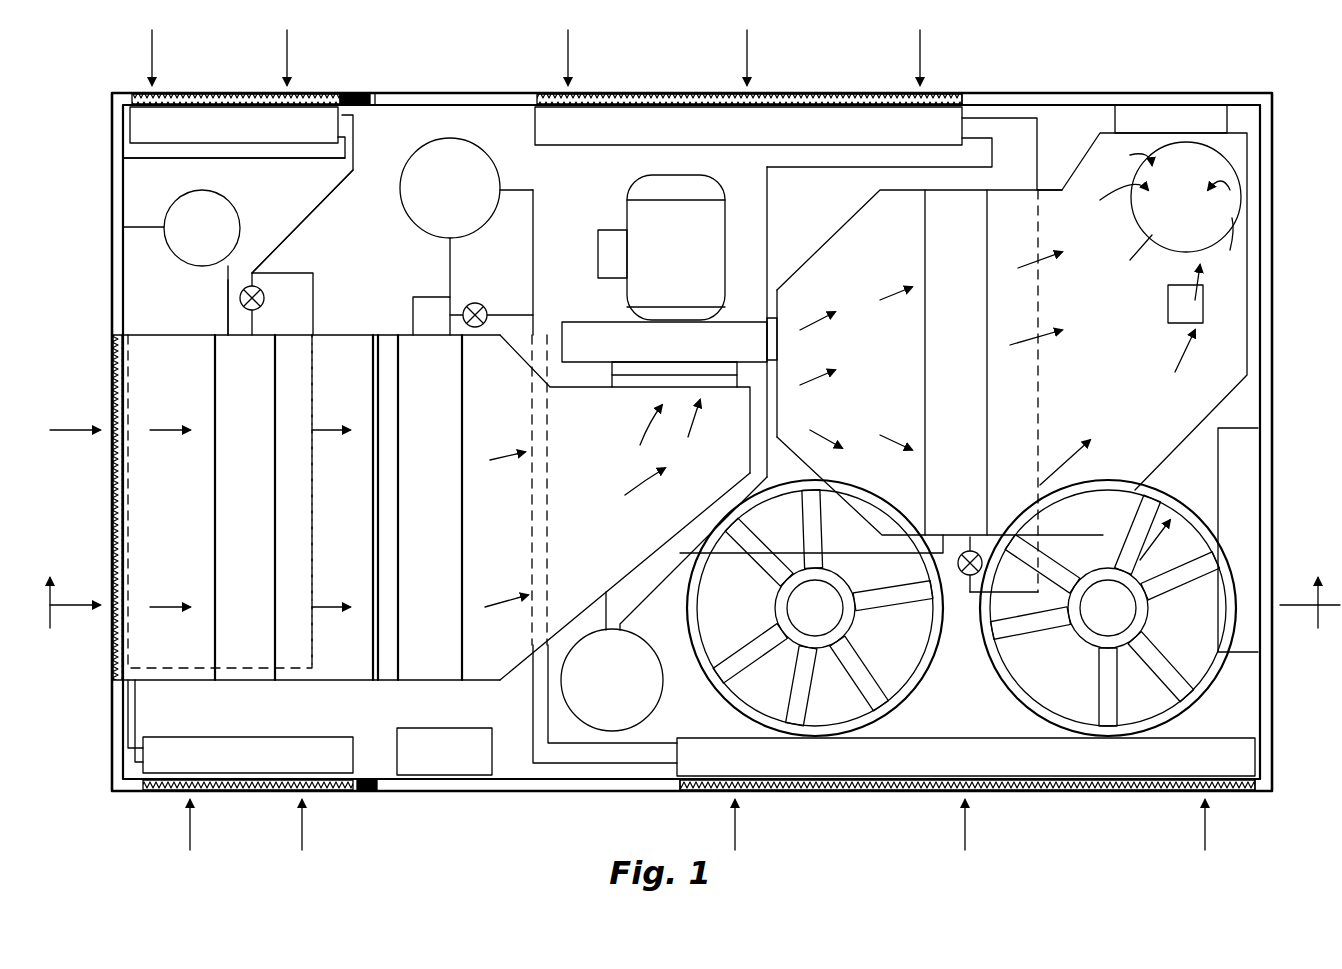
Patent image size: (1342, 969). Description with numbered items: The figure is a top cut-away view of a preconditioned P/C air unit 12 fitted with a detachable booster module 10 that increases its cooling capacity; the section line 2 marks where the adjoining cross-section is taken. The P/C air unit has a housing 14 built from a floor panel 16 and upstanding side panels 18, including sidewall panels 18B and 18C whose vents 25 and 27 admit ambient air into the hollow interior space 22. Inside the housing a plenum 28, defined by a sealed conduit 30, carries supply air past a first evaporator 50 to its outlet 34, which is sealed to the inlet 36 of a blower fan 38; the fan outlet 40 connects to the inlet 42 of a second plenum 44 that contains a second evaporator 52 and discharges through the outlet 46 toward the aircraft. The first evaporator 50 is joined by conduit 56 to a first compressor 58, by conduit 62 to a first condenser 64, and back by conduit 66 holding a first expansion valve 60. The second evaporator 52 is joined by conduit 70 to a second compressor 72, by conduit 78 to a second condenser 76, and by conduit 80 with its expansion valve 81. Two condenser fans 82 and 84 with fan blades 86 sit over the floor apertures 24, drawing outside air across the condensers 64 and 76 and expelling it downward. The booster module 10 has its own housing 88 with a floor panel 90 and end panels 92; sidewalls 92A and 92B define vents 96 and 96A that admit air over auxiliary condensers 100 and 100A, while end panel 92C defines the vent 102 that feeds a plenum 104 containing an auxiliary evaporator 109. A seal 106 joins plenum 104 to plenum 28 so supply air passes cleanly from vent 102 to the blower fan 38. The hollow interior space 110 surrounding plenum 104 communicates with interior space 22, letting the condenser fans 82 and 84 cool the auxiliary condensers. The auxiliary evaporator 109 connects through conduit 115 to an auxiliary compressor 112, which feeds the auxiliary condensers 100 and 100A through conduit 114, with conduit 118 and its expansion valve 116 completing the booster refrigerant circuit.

The booster module 10 is at (250, 93).
The P/C air unit 12 is at (612, 93).
The housing 14 is at (559, 792).
The floor panel 16 is at (502, 257).
The side panels 18 is at (402, 93).
The sidewall panel 18B is at (918, 792).
The sidewall panel 18C is at (950, 93).
The section line 2 is at (691, 540).
The hollow interior space 22 is at (562, 459).
The apertures 24 is at (961, 608).
The vent 25 is at (1070, 792).
The vent 27 is at (828, 93).
The plenum 28 is at (525, 358).
The sealed conduit 30 is at (645, 578).
The outlet 34 is at (713, 388).
The inlet 36 is at (658, 378).
The blower fan 38 is at (661, 247).
The fan outlet 40 is at (785, 330).
The inlet 42 is at (790, 352).
The second plenum 44 is at (795, 458).
The outlet 46 is at (1135, 215).
The first evaporator 50 is at (445, 530).
The second evaporator 52 is at (985, 340).
The conduit 56 is at (450, 268).
The first compressor 58 is at (466, 236).
The first expansion valve 60 is at (440, 297).
The conduit 62 is at (540, 215).
The first condenser 64 is at (966, 757).
The conduit 66 is at (533, 313).
The conduit 70 is at (790, 555).
The second compressor 72 is at (612, 680).
The second condenser 76 is at (748, 126).
The conduit 78 is at (775, 232).
The conduit 80 is at (1040, 160).
The expansion valve 81 is at (968, 577).
The condenser fan 82 is at (840, 650).
The condenser fan 84 is at (1103, 690).
The fan blades 86 is at (868, 585).
The housing 88 is at (122, 206).
The floor panel 90 is at (331, 305).
The end panels 92 is at (112, 140).
The sidewall 92A is at (330, 792).
The sidewall 92B is at (168, 93).
The end panel 92C is at (115, 356).
The vent 96 is at (262, 792).
The vent 96A is at (302, 93).
The auxiliary condenser 100 is at (310, 727).
The auxiliary condenser 100A is at (234, 125).
The vent 102 is at (112, 382).
The plenum 104 is at (165, 496).
The seal 106 is at (373, 405).
The auxiliary evaporator 109 is at (212, 507).
The hollow interior space 110 is at (262, 728).
The auxiliary compressor 112 is at (181, 262).
The conduit 114 is at (122, 282).
The conduit 115 is at (228, 312).
The expansion valve 116 is at (264, 298).
The conduit 118 is at (300, 236).